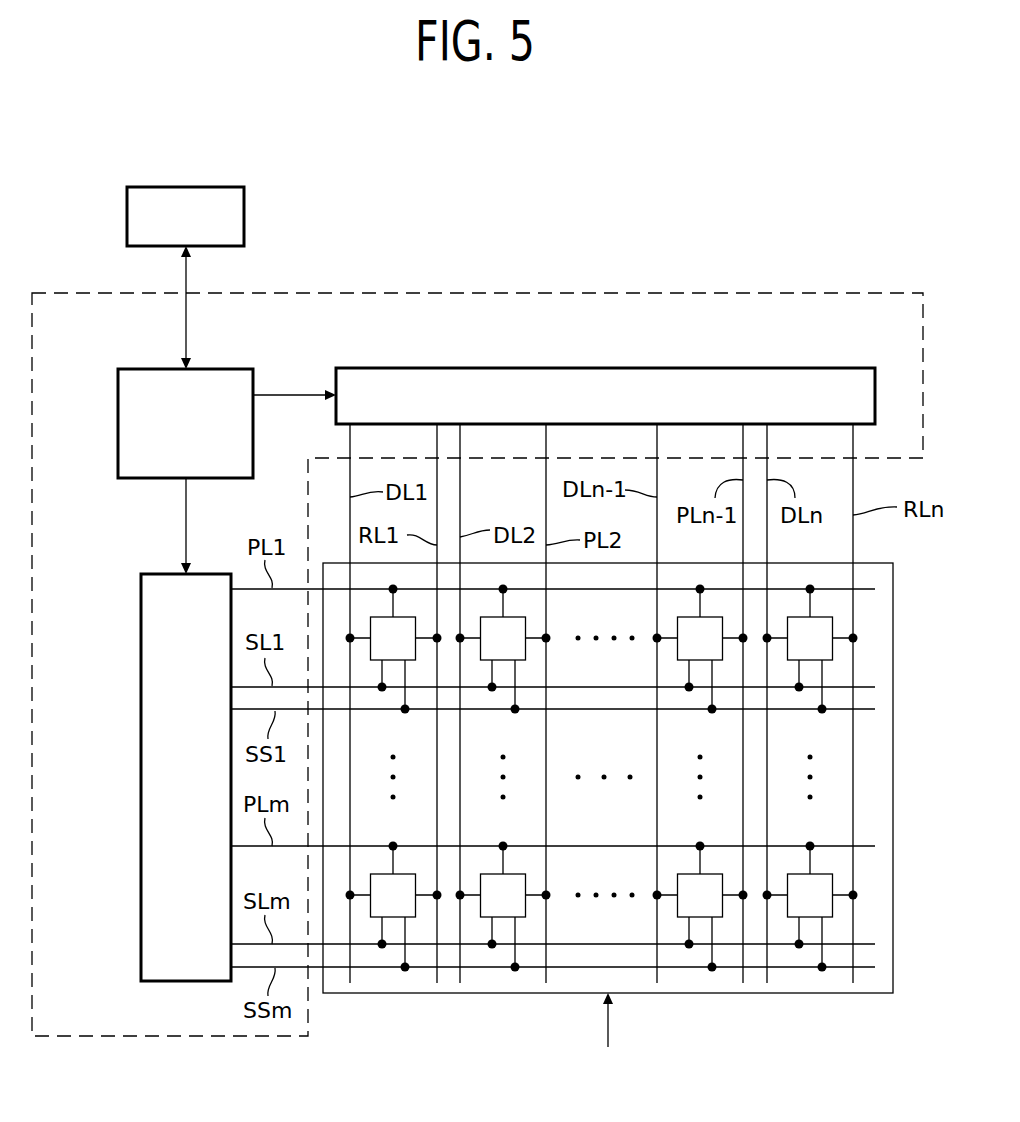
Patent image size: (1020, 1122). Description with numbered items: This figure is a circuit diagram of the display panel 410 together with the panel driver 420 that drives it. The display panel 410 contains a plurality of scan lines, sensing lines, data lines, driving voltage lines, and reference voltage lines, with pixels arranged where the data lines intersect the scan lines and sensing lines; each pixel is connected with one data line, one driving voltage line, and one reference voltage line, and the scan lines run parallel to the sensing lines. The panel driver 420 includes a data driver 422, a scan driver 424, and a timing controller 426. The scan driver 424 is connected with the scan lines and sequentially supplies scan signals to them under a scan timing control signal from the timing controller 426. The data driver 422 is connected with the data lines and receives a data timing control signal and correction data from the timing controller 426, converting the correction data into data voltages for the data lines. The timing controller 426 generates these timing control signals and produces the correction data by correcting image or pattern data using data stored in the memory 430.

The display panel 410 is at (697, 993).
The panel driver 420 is at (612, 292).
The data driver 422 is at (746, 368).
The scan driver 424 is at (141, 882).
The timing controller 426 is at (118, 419).
The memory 430 is at (127, 220).